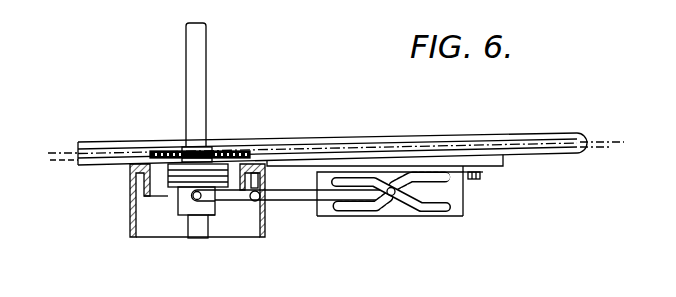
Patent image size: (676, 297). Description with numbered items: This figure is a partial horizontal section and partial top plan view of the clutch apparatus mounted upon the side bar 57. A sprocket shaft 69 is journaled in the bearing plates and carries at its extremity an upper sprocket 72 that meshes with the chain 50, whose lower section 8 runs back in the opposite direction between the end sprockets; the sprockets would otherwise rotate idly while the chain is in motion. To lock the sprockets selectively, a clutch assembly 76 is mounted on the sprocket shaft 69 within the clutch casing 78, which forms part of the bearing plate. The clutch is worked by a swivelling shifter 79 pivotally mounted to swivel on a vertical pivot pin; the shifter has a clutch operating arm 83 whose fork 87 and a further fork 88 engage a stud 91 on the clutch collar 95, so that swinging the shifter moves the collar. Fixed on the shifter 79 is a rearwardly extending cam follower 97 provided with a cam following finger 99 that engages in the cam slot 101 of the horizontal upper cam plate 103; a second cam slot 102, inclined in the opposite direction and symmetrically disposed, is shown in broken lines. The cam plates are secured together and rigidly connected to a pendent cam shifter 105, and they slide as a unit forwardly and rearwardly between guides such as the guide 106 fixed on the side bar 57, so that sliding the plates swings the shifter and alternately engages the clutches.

The lower section of chain 8 is at (65, 150).
The chain 50 is at (604, 126).
The side bar 57 is at (518, 133).
The upper sprocket 72 is at (170, 150).
The fork 88 is at (257, 164).
The clutch casing 78 is at (133, 237).
The clutch assembly 76 is at (168, 178).
The fork 87 is at (188, 214).
The stud 91 is at (193, 199).
The sprocket shaft 69 is at (198, 239).
The clutch collar 95 is at (213, 216).
The swivelling shifter 79 is at (285, 201).
The clutch operating arm 83 is at (240, 201).
The guide 106 is at (504, 163).
The upper cam plate 103 is at (463, 203).
The cam slot 101 is at (430, 212).
The pendent cam shifter 105 is at (484, 182).
The cam slot 102 is at (380, 219).
The cam follower 97 is at (331, 196).
The cam following finger 99 is at (393, 200).